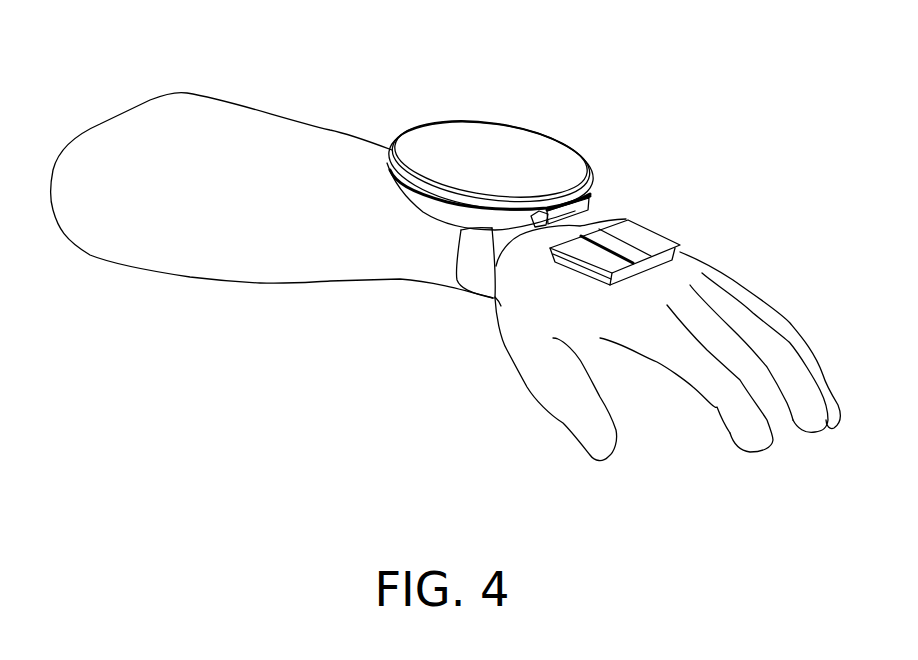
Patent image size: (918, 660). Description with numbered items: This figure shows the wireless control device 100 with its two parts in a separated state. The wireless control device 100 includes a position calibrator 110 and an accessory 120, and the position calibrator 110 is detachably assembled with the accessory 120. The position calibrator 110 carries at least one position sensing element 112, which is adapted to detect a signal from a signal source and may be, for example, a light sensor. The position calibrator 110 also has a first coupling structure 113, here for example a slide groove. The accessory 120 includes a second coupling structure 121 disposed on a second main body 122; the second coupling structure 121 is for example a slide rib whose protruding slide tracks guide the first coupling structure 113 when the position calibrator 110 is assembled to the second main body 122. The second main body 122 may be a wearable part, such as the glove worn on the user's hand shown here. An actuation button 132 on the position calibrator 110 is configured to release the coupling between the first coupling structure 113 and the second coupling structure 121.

The wireless control device 100 is at (798, 63).
The position calibrator 110 is at (615, 176).
The position sensing element 112 is at (507, 148).
The first coupling structure 113 is at (492, 244).
The accessory 120 is at (685, 463).
The second coupling structure 121 is at (587, 254).
The second main body 122 is at (687, 272).
The actuation button 132 is at (580, 224).